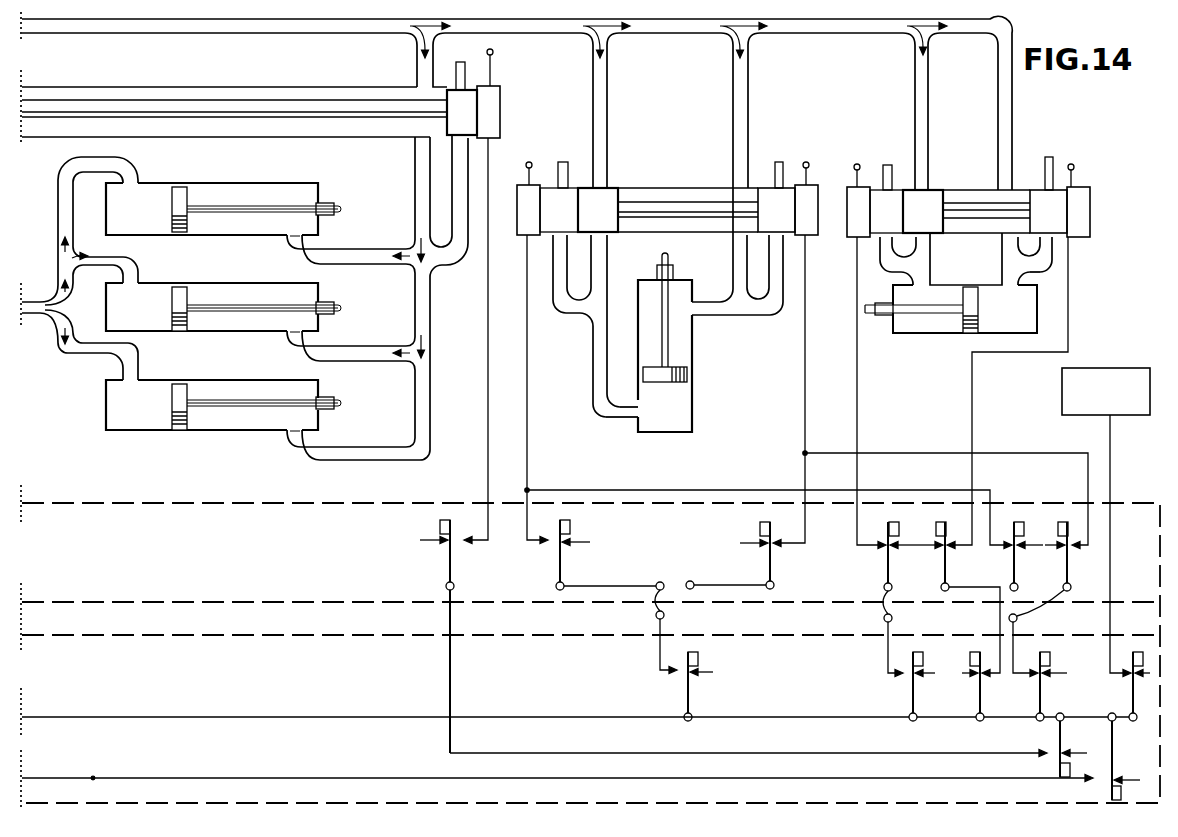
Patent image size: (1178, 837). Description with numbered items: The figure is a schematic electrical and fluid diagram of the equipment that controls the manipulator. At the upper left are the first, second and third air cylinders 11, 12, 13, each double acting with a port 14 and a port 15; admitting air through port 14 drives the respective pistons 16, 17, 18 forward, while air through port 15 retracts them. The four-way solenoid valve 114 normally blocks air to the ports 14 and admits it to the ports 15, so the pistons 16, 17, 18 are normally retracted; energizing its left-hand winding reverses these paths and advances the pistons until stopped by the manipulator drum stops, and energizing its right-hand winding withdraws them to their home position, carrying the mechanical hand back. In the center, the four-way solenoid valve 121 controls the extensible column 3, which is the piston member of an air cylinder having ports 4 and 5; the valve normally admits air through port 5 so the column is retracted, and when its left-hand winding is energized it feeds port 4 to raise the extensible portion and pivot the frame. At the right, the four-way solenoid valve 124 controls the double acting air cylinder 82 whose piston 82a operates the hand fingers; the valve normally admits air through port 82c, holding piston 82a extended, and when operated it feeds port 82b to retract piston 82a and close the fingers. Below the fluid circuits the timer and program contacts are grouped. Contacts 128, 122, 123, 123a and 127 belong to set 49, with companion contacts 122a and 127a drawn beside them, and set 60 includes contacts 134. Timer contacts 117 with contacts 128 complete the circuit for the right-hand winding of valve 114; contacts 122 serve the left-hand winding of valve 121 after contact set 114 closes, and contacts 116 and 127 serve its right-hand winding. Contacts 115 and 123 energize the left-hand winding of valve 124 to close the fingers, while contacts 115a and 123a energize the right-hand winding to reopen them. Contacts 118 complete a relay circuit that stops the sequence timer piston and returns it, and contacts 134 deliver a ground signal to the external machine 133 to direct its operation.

The port 14 is at (137, 182).
The first air cylinder 11 is at (247, 234).
The second air cylinder 12 is at (233, 330).
The third air cylinder 13 is at (200, 433).
The port 15 is at (287, 246).
The piston 16 is at (340, 213).
The piston 17 is at (340, 311).
The piston 18 is at (340, 402).
The four-way solenoid valve 114 is at (503, 105).
The four-way solenoid valve 121 is at (645, 185).
The four-way solenoid valve 124 is at (972, 190).
The port 5 is at (695, 302).
The extensible column 3 is at (691, 373).
The port 4 is at (637, 417).
The double acting air cylinder 82 is at (948, 333).
The piston 82a is at (870, 316).
The port 82b is at (936, 268).
The port 82c is at (1020, 283).
The external machine 133 is at (1116, 401).
The contacts 134 is at (1133, 652).
The contact set 49 is at (325, 502).
The contact set 60 is at (333, 635).
The contacts 128 is at (440, 523).
The contacts 122 is at (573, 527).
The switch 122a is at (760, 528).
The contacts 123 is at (889, 523).
The contacts 123a is at (936, 525).
The contacts 127 is at (1067, 520).
The switch 127a is at (1021, 519).
The contacts 115 is at (923, 657).
The contacts 115a is at (967, 658).
The contact set 116 is at (1050, 660).
The contact set 117 is at (1060, 768).
The contacts 118 is at (1121, 792).